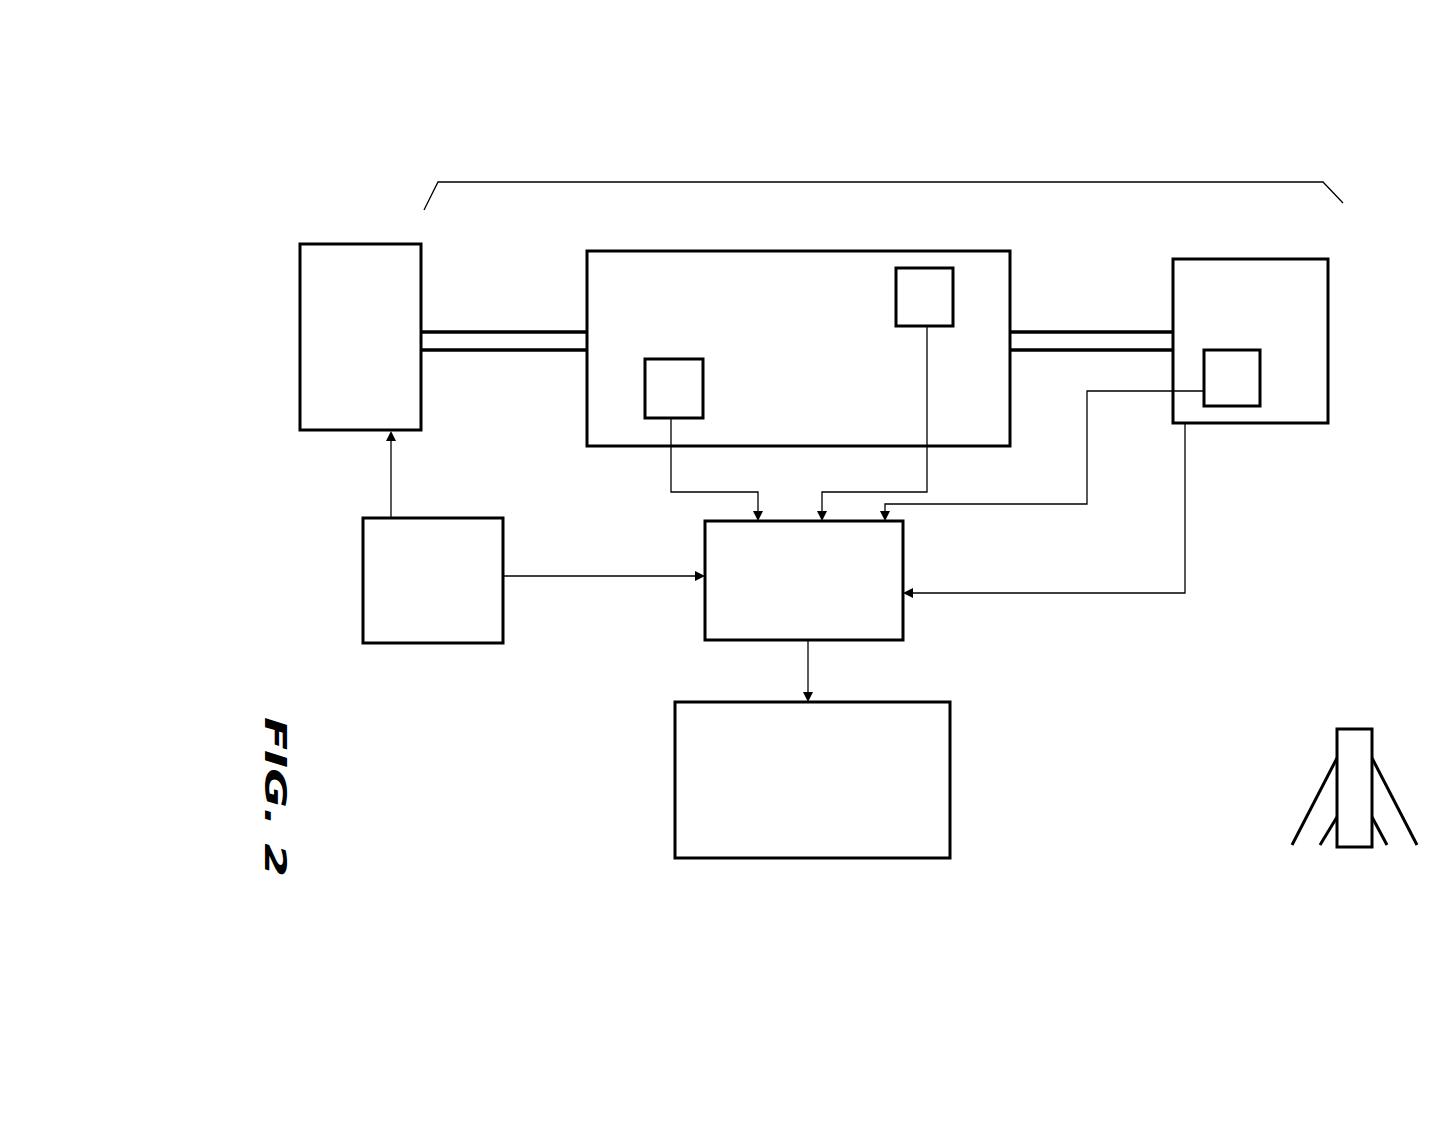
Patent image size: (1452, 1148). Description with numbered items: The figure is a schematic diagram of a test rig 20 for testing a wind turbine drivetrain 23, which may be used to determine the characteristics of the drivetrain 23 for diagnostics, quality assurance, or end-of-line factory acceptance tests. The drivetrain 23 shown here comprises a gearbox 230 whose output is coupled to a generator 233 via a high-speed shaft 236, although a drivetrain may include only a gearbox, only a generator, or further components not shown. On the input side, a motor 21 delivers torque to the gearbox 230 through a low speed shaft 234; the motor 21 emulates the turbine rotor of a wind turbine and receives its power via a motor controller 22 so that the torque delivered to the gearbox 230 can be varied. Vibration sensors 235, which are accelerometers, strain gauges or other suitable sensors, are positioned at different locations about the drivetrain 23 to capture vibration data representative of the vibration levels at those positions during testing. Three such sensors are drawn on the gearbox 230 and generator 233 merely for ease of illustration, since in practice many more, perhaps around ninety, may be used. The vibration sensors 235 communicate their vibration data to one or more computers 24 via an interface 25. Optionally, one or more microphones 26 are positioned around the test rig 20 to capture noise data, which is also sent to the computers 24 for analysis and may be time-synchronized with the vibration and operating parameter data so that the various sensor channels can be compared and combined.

The test rig 20 is at (206, 191).
The motor 21 is at (421, 260).
The motor controller 22 is at (400, 643).
The wind turbine drivetrain 23 is at (893, 182).
The computer 24 is at (950, 735).
The interface 25 is at (903, 575).
The microphone 26 is at (1357, 729).
The gearbox 230 is at (686, 251).
The generator 233 is at (1190, 259).
The low speed shaft 234 is at (490, 330).
The vibration sensors 235 is at (671, 359).
The high-speed shaft 236 is at (1065, 330).